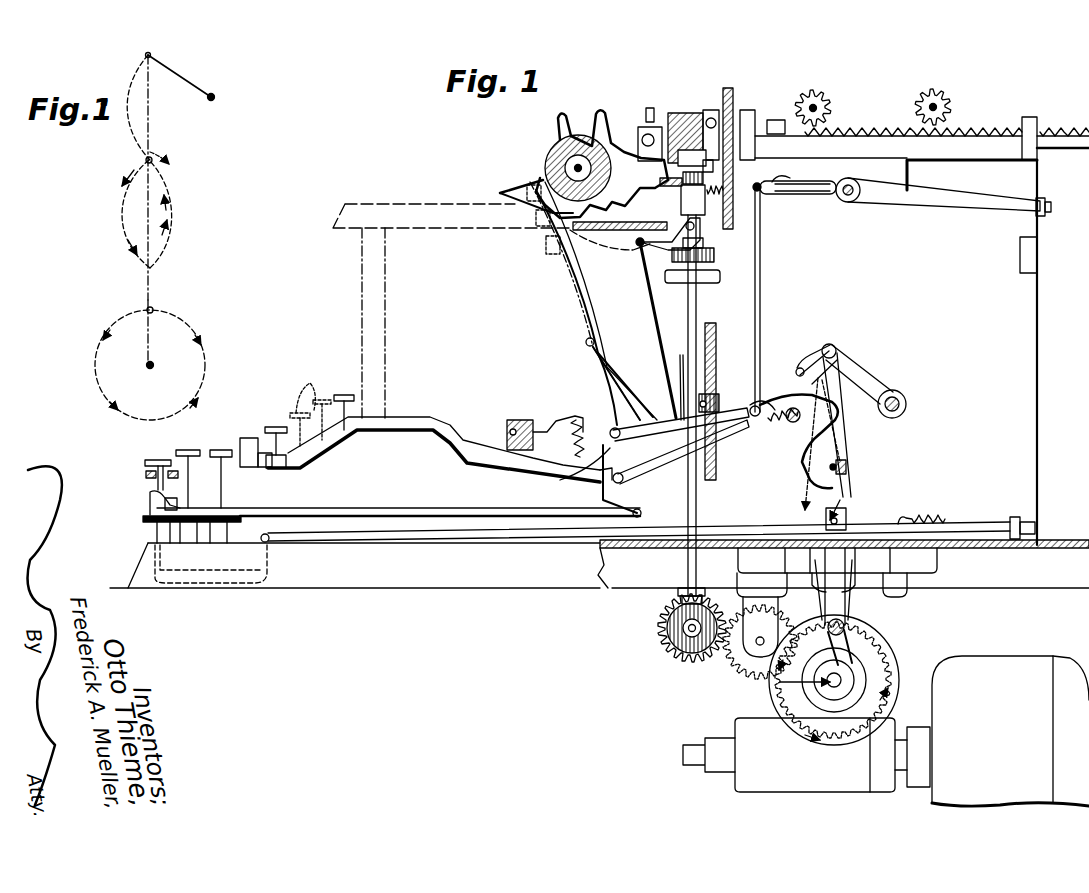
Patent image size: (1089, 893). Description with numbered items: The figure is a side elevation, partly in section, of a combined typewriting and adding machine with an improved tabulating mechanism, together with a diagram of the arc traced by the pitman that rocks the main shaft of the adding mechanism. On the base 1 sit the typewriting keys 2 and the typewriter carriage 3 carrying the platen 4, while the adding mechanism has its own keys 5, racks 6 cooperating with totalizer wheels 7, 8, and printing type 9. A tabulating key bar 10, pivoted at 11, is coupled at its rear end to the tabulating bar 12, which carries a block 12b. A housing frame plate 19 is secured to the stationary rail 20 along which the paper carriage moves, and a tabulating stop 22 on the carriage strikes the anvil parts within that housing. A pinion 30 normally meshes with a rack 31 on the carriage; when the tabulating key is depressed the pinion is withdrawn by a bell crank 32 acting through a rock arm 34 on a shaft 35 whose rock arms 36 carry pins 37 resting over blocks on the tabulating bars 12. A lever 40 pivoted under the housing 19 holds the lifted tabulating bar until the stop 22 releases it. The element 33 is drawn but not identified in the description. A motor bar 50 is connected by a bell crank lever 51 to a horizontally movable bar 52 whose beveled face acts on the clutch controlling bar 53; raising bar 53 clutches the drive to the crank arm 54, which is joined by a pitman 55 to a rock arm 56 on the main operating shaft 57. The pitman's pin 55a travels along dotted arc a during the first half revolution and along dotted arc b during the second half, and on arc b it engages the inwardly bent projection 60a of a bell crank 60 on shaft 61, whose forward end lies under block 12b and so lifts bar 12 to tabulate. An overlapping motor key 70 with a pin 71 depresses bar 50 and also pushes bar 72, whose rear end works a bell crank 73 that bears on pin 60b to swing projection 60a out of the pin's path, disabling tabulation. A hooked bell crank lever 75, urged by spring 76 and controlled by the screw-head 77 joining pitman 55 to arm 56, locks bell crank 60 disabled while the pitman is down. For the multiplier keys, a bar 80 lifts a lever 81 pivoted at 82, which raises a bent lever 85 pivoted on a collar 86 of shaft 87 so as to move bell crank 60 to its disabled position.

In FIG. 1, the base 1 is at (408, 572).
In FIG. 1, the keys of the typewriting mechanism 2 is at (302, 410).
In FIG. 1, the typewriter carriage 3 is at (599, 125).
In FIG. 1, the platen 4 is at (546, 162).
In FIG. 1, the keys of the adding mechanism 5 is at (222, 448).
In FIG. 1, the racks 6 is at (1064, 128).
In FIG. 1, the totalizer wheel 7 is at (826, 102).
In FIG. 1, the totalizer wheel 8 is at (946, 102).
In FIG. 1, the printing type 9 is at (556, 224).
In FIG. 1, the tabulating key bar 10 is at (430, 419).
In FIG. 1, the pivot 11 is at (606, 482).
In FIG. 1, the tabulating bar 12 is at (716, 347).
In FIG. 1, the block 12b is at (719, 400).
In FIG. 1, the housing frame plate 19 is at (692, 158).
In FIG. 1, the stationary rail 20 is at (706, 128).
In FIG. 1, the tabulating stop 22 is at (660, 140).
In FIG. 1, the pinion 30 is at (700, 180).
In FIG. 1, the rack 31 is at (672, 177).
In FIG. 1, the bell crank 32 is at (652, 246).
In FIG. 1, the link 33 is at (658, 332).
In FIG. 1, the rock arm 34 is at (664, 418).
In FIG. 1, the shaft 35 is at (614, 420).
In FIG. 1, the rock arms 36 is at (677, 414).
In FIG. 1, the pins 37 is at (719, 404).
In FIG. 1, the lever 40 is at (680, 166).
In FIG. 1, the motor bar 50 is at (146, 476).
In FIG. 1, the bell crank lever 51 is at (225, 583).
In FIG. 1, the horizontally movable bar 52 is at (893, 521).
In FIG. 1, the clutch controlling bar 53 is at (842, 514).
In FIG. 1A, the crank arm 54 is at (152, 350).
In FIG. 1, the crank arm 54 is at (842, 656).
In FIG. 1A, the pitman 55 is at (152, 300).
In FIG. 1, the pitman 55 is at (848, 612).
In FIG. 1A, the pin 55a is at (145, 160).
In FIG. 1, the pin 55a is at (836, 468).
In FIG. 1A, the rock arm 56 is at (182, 81).
In FIG. 1, the rock arm 56 is at (872, 376).
In FIG. 1A, the main operating shaft 57 is at (218, 97).
In FIG. 1, the main operating shaft 57 is at (906, 407).
In FIG. 1, the bell crank 60 is at (788, 424).
In FIG. 1, the projection 60a is at (848, 470).
In FIG. 1, the pin 60b is at (770, 427).
In FIG. 1, the shaft 61 is at (800, 437).
In FIG. 1, the motor key 70 is at (164, 470).
In FIG. 1, the pin 71 is at (156, 490).
In FIG. 1, the bar 72 is at (347, 508).
In FIG. 1, the bell crank 73 is at (667, 466).
In FIG. 1, the hooked bell crank lever 75 is at (822, 362).
In FIG. 1, the spring 76 is at (781, 400).
In FIG. 1, the screw-head 77 is at (836, 352).
In FIG. 1, the bar 80 is at (1043, 203).
In FIG. 1, the lever 81 is at (955, 206).
In FIG. 1, the pivot 82 is at (782, 178).
In FIG. 1, the lever 85 is at (816, 196).
In FIG. 1, the collar 86 is at (849, 203).
In FIG. 1, the shaft 87 is at (761, 280).
In FIG. 1A, the dotted line a is at (118, 216).
In FIG. 1, the dotted line a is at (806, 492).
In FIG. 1A, the dotted line b is at (170, 206).